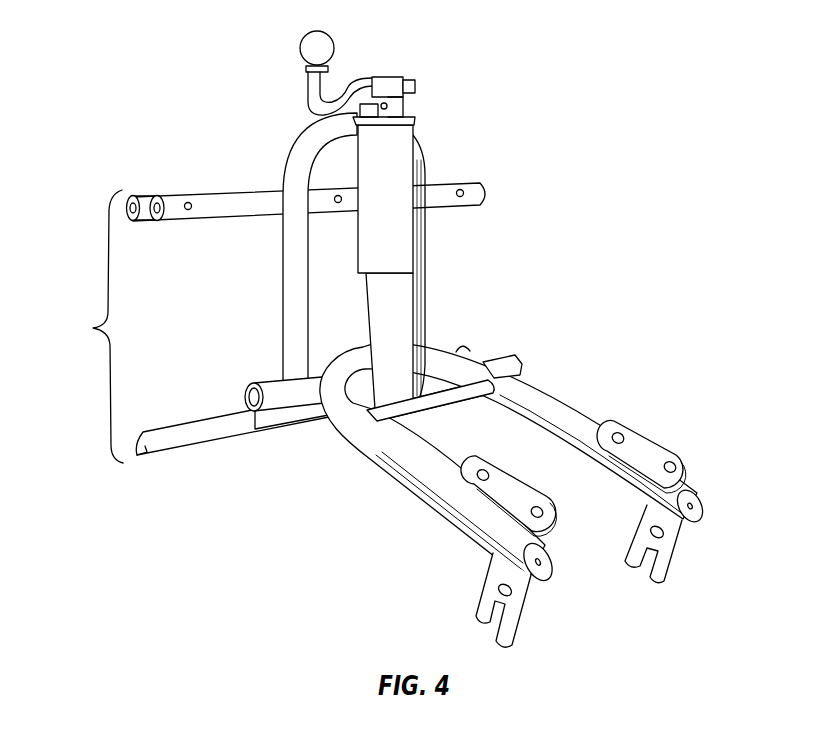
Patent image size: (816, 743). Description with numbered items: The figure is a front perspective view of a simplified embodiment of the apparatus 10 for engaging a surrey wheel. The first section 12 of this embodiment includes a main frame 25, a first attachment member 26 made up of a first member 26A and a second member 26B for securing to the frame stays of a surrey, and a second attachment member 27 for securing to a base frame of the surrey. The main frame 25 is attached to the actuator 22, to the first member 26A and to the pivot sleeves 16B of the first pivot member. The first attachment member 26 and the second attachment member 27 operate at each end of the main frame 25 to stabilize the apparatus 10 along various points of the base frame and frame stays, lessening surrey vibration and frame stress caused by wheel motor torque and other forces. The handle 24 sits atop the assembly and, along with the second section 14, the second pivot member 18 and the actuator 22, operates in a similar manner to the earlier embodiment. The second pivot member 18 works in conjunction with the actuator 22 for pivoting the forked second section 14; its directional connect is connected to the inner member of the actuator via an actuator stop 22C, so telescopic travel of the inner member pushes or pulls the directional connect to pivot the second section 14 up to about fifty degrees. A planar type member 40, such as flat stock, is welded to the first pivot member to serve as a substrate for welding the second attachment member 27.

The apparatus 10 is at (622, 63).
The first section 12 is at (93, 326).
The second section 14 is at (548, 412).
The pivot sleeves 16B is at (273, 385).
The second pivot member 18 is at (508, 462).
The actuator 22 is at (409, 300).
The actuator stop 22C is at (400, 424).
The handle 24 is at (300, 42).
The main frame 25 is at (303, 200).
The first attachment member 26 is at (323, 207).
The first member 26A is at (214, 212).
The second member 26B is at (146, 196).
The second attachment member 27 is at (184, 450).
The planar type member 40 is at (287, 416).